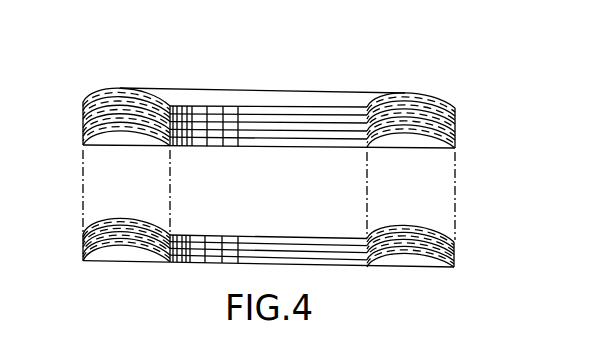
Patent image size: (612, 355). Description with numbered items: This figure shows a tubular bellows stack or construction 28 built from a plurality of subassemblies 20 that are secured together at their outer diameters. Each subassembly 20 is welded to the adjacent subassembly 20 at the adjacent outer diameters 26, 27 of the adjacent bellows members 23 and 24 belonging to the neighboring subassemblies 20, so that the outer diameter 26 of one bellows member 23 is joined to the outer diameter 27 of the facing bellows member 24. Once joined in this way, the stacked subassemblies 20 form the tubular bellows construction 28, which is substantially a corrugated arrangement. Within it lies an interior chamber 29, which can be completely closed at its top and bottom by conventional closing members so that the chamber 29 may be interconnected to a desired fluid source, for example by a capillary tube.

The subassembly 20 is at (458, 107).
The bellows member 23 is at (116, 100).
The bellows member 24 is at (144, 108).
The outer diameter 26 is at (83, 107).
The outer diameter 27 is at (83, 114).
The tubular bellows construction 28 is at (450, 72).
The interior chamber 29 is at (279, 102).